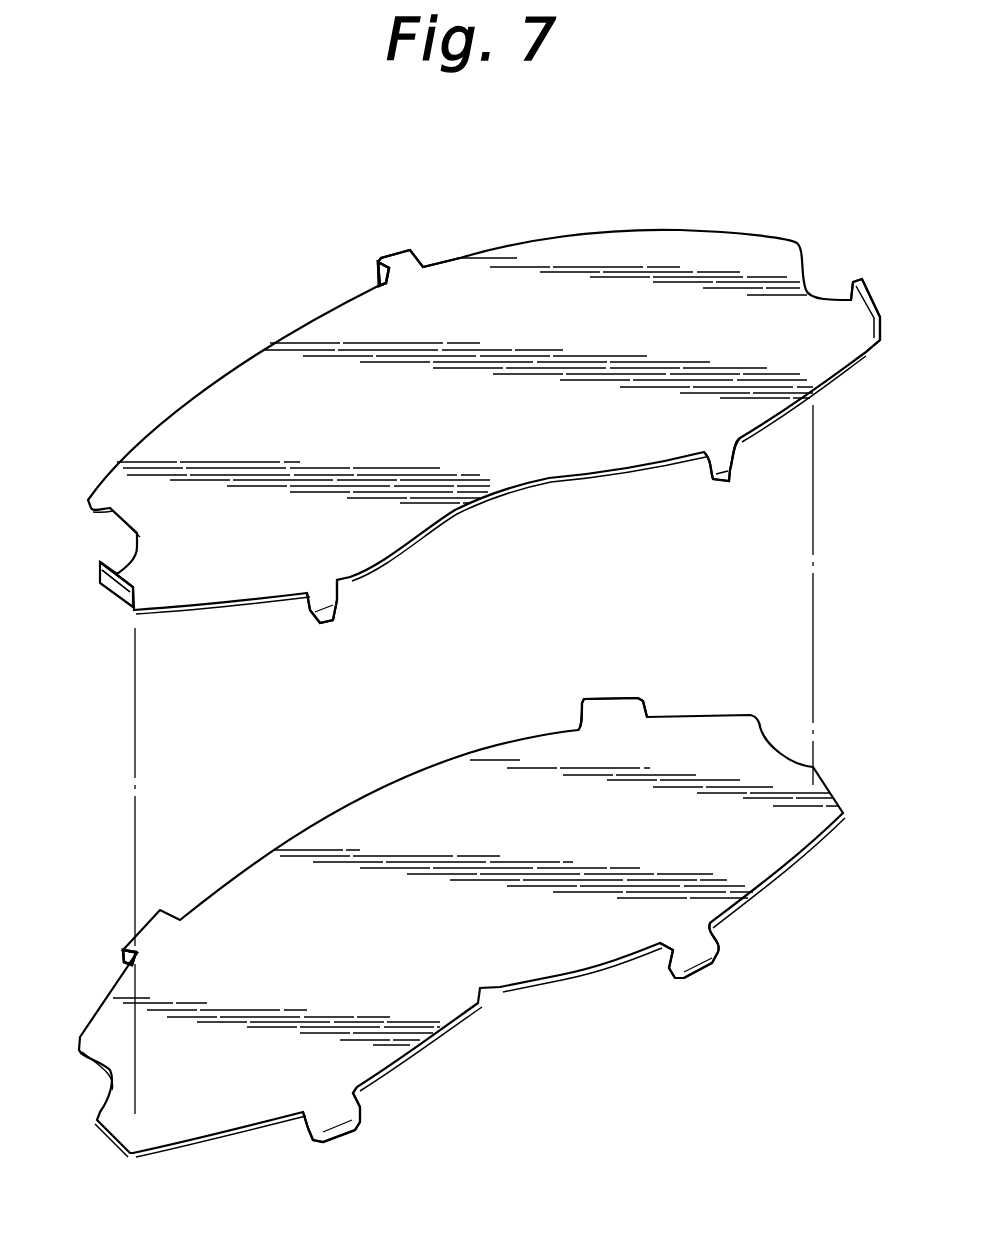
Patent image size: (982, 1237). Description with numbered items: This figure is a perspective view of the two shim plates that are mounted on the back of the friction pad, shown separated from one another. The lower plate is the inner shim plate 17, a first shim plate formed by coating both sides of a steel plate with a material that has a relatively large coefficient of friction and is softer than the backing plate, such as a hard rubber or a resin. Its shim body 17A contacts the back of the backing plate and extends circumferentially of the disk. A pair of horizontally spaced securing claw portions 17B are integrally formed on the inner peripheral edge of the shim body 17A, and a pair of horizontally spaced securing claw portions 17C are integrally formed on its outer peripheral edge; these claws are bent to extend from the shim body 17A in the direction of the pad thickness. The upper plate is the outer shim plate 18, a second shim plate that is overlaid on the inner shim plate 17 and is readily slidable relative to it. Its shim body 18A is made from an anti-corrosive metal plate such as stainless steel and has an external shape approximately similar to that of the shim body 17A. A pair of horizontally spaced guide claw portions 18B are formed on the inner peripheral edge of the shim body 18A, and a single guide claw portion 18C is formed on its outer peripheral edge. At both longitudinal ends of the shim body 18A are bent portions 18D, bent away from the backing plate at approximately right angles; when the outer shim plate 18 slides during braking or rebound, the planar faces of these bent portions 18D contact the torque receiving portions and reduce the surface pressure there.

The inner shim plate 17 is at (225, 1120).
The shim body 17A is at (558, 952).
The securing claw portions 17B is at (705, 978).
The securing claw portions 17C is at (606, 708).
The outer shim plate 18 is at (638, 258).
The shim body 18A is at (258, 400).
The guide claw portions 18B is at (728, 487).
The guide claw portion 18C is at (393, 262).
The bent portions 18D is at (866, 280).